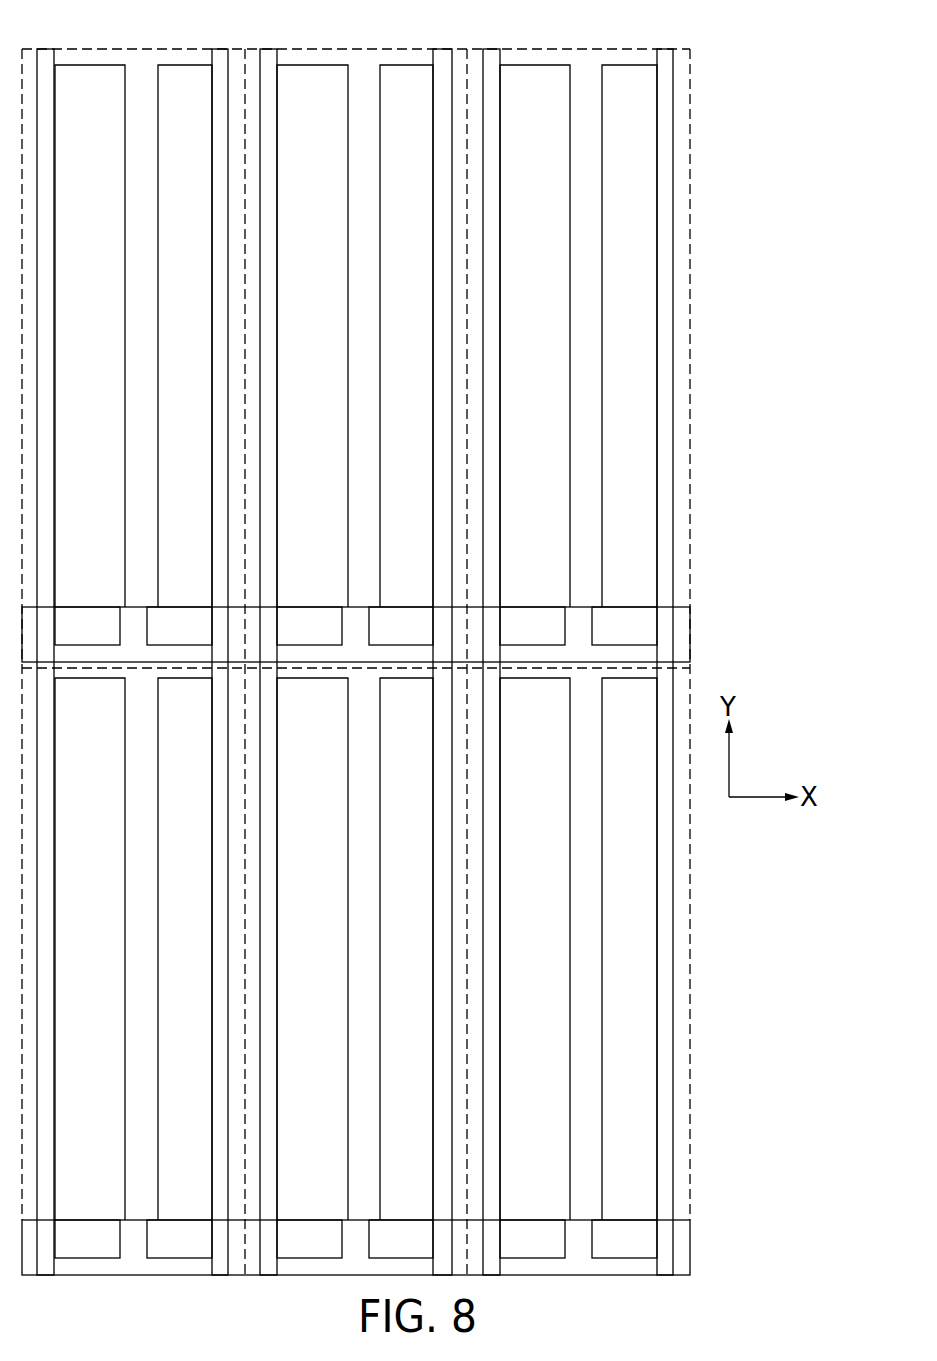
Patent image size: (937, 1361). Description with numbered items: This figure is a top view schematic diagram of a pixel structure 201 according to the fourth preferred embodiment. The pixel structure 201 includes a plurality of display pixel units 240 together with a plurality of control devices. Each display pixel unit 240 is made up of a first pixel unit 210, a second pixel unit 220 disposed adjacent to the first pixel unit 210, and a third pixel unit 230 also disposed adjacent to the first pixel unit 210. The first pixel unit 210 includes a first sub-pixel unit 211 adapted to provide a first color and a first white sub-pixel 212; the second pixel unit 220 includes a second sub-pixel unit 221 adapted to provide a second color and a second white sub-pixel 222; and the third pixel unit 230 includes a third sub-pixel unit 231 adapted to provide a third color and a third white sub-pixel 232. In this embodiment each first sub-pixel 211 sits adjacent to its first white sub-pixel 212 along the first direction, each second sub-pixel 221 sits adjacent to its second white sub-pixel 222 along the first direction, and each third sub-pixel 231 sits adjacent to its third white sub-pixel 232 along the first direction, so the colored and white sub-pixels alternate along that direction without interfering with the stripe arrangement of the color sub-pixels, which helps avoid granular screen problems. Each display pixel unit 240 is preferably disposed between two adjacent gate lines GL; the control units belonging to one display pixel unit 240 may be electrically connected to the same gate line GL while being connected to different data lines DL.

The pixel structure 201 is at (727, 88).
The first pixel unit 210 is at (519, 662).
The second pixel unit 220 is at (408, 662).
The third pixel unit 230 is at (631, 661).
The display pixel unit 240 is at (443, 662).
The first sub-pixel unit 211 is at (333, 336).
The first white sub-pixel 212 is at (425, 336).
The second sub-pixel unit 221 is at (112, 336).
The second white sub-pixel 222 is at (202, 336).
The third sub-pixel unit 231 is at (556, 336).
The third white sub-pixel 232 is at (649, 336).
The data line DL is at (46, 51).
The gate line GL is at (683, 637).